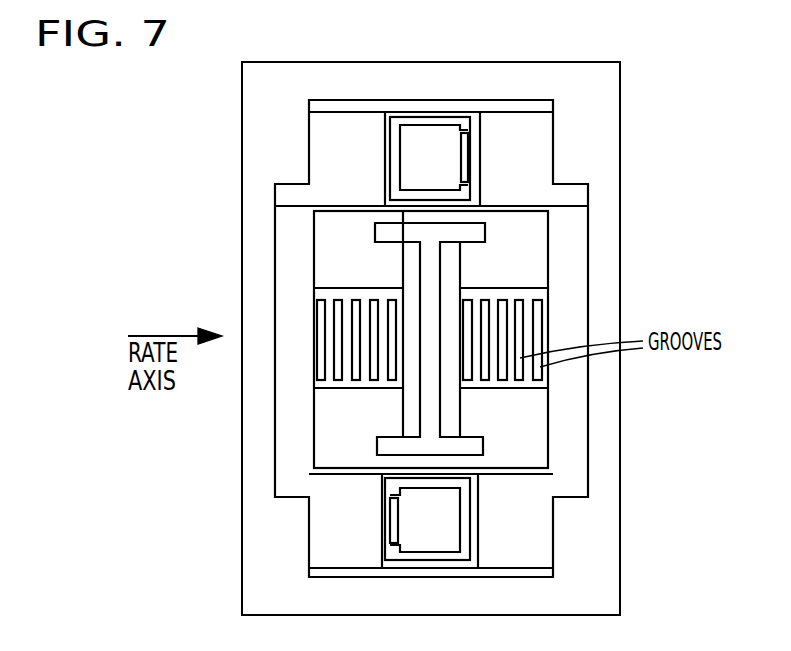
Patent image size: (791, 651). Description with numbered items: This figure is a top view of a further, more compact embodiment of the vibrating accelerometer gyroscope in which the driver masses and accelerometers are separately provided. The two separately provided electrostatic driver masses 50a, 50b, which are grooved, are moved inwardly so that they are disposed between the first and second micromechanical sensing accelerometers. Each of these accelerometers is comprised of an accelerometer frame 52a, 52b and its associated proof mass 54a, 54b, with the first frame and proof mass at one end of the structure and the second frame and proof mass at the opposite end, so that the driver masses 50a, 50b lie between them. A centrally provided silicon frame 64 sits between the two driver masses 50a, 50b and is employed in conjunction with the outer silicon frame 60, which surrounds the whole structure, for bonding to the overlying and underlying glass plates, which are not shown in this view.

The grooved driver mass 50a is at (340, 288).
The grooved driver mass 50b is at (548, 288).
The accelerometer frame 52a is at (381, 148).
The accelerometer frame 52b is at (480, 529).
The proof mass 54a is at (432, 148).
The proof mass 54b is at (412, 518).
The outer silicon frame 60 is at (242, 556).
The central silicon frame 64 is at (483, 448).